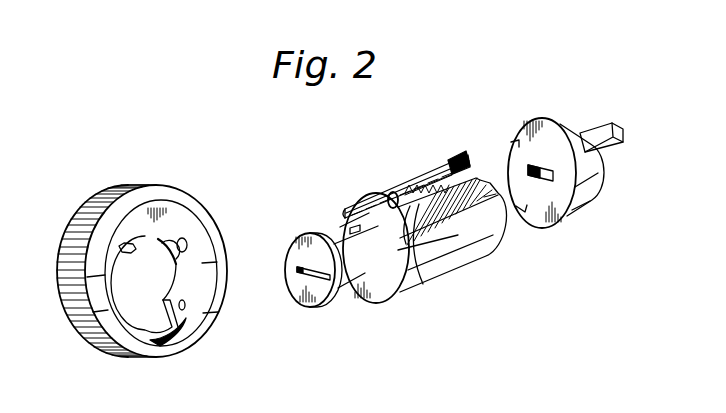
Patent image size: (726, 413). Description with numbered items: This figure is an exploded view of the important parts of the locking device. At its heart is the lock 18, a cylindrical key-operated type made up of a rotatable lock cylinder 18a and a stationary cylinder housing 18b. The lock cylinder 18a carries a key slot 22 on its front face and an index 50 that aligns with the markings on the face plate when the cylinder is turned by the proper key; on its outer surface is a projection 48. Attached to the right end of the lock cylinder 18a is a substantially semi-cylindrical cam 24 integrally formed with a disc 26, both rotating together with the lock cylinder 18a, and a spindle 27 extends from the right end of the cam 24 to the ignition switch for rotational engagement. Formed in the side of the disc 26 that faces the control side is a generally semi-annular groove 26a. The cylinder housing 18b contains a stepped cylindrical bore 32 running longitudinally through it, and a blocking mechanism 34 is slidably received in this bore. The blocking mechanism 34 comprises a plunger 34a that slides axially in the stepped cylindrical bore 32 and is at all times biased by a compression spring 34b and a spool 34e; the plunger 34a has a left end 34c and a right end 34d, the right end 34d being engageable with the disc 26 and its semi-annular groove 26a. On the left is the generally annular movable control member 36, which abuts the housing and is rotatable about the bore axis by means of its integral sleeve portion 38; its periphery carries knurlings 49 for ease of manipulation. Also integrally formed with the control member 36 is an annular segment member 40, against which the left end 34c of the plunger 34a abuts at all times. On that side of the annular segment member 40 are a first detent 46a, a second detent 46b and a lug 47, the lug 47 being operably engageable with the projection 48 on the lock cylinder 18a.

The lock 18 is at (435, 259).
The lock cylinder 18a is at (357, 270).
The cylinder housing 18b is at (470, 250).
The key slot 22 is at (323, 280).
The cam 24 is at (556, 176).
The disc 26 is at (562, 208).
The semi-annular groove 26a is at (510, 160).
The spindle 27 is at (598, 132).
The stepped cylindrical bore 32 is at (421, 286).
The blocking mechanism 34 is at (399, 215).
The plunger 34a is at (393, 193).
The compression spring 34b is at (450, 160).
The left end of plunger 34c is at (345, 216).
The right end of plunger 34d is at (476, 165).
The spool 34e is at (437, 202).
The movable control member 36 is at (55, 315).
The sleeve portion 38 is at (157, 340).
The annular segment member 40 is at (165, 240).
The first detent 46a is at (187, 247).
The second detent 46b is at (185, 307).
The lug 47 is at (125, 243).
The projection 48 is at (356, 226).
The knurlings 49 is at (82, 212).
The index 50 is at (295, 266).